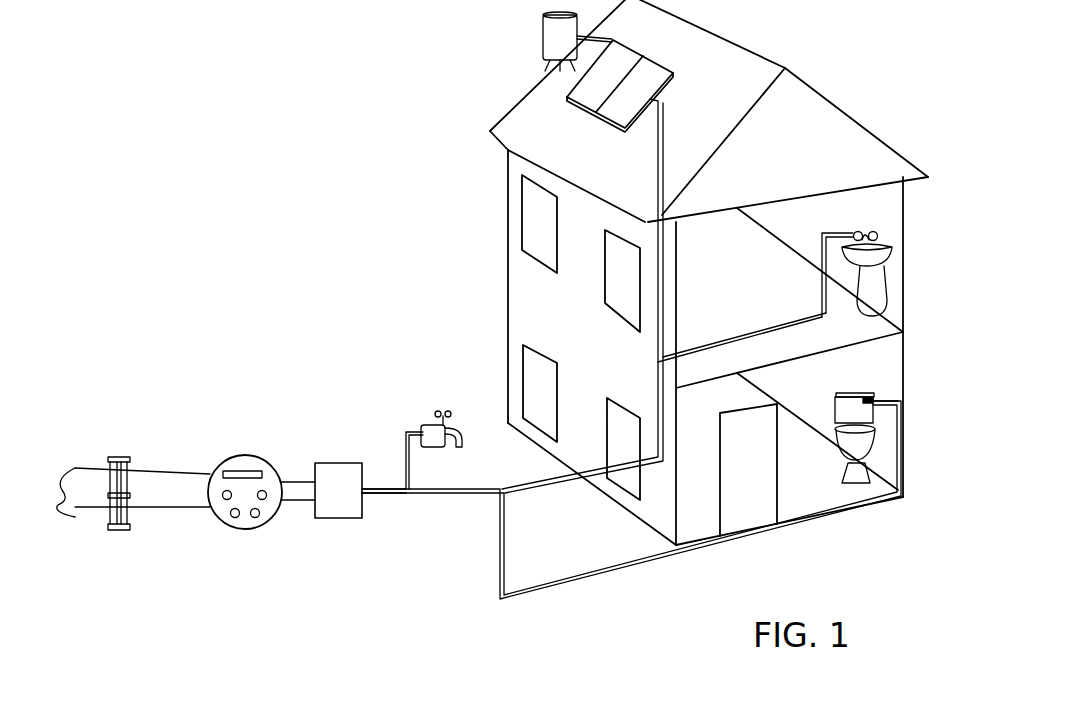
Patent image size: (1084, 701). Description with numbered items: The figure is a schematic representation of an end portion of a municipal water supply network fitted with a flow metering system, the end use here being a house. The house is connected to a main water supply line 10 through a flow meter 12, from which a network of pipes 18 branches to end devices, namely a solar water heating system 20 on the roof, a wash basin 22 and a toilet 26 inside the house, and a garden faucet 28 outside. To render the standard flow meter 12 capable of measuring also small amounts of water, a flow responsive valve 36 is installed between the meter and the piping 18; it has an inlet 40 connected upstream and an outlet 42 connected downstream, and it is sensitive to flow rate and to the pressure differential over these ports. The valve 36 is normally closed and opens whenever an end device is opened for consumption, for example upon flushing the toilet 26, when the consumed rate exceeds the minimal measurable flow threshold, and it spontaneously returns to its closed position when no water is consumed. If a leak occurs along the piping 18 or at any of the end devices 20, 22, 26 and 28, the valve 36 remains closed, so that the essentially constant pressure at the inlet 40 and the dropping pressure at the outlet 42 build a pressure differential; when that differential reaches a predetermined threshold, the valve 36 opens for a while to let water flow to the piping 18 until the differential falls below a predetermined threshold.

The main water supply line 10 is at (167, 458).
The flow meter 12 is at (238, 440).
The network of pipes 18 is at (660, 400).
The solar water heating system 20 is at (528, 55).
The wash basin 22 is at (887, 240).
The toilet 26 is at (857, 396).
The garden faucet 28 is at (430, 428).
The flow responsive valve 36 is at (345, 540).
The inlet 40 is at (313, 495).
The outlet 42 is at (363, 500).